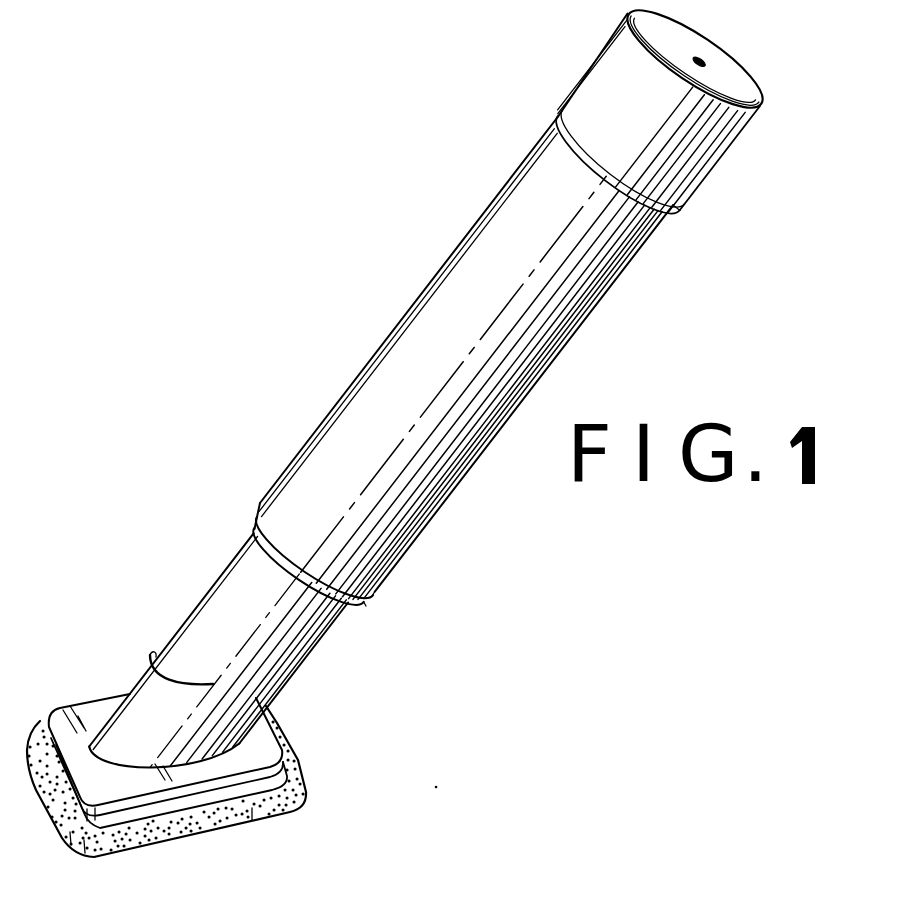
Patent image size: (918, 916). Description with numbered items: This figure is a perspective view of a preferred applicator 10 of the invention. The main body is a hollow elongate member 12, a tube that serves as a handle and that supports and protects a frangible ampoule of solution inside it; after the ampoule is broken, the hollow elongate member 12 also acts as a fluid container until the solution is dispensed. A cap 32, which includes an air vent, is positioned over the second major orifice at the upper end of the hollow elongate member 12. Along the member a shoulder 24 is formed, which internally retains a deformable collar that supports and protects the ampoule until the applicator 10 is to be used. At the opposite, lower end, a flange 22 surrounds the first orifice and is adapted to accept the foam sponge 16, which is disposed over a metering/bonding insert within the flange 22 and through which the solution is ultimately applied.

The applicator 10 is at (422, 193).
The hollow elongate member 12 is at (440, 263).
The foam sponge 16 is at (250, 817).
The flange 22 is at (100, 707).
The shoulder 24 is at (257, 523).
The cap 32 is at (727, 78).